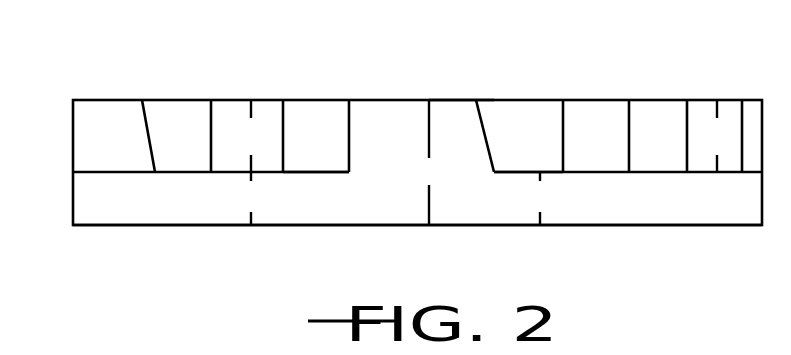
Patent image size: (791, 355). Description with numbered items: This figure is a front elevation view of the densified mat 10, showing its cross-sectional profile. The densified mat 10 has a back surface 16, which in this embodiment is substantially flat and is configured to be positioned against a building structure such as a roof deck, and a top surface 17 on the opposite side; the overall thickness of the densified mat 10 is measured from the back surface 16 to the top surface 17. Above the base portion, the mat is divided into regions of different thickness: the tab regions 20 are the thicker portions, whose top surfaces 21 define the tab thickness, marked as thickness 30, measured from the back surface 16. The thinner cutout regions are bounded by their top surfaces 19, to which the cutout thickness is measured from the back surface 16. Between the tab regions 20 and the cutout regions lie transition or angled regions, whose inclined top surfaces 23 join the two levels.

The densified mat 10 is at (417, 162).
The back surface 16 is at (612, 225).
The top surface 17 is at (448, 100).
The top surface of cutout region 19 is at (300, 172).
The tab region 20 is at (400, 198).
The top surface of tab region 21 is at (240, 100).
The top surface of transition or angled region 23 is at (150, 135).
The tab region thickness t30 30 is at (487, 136).